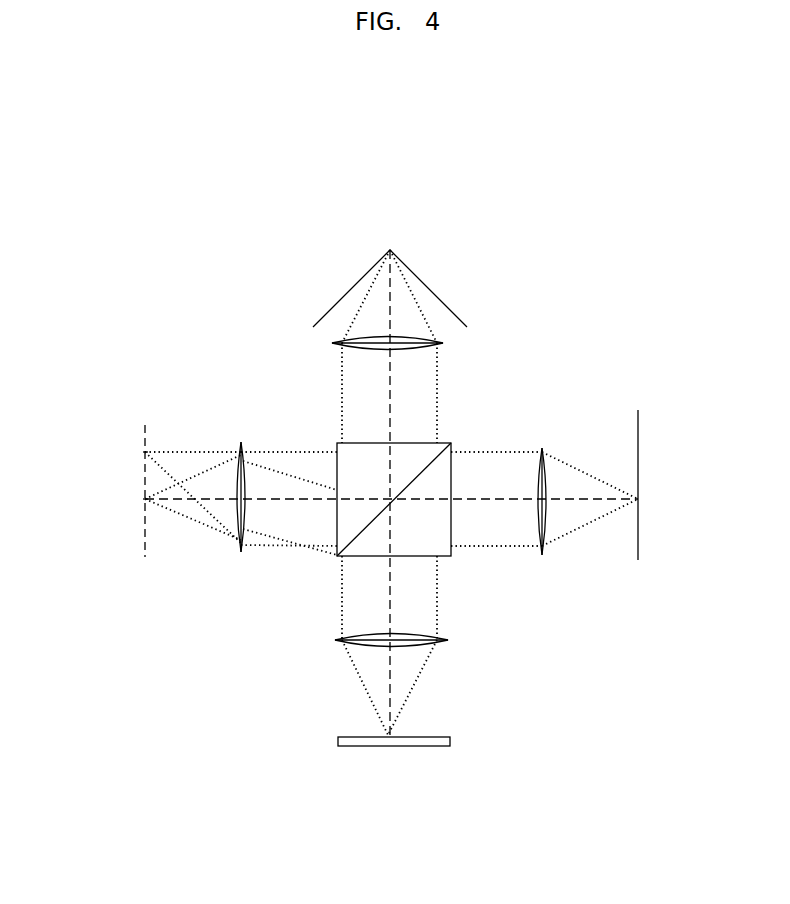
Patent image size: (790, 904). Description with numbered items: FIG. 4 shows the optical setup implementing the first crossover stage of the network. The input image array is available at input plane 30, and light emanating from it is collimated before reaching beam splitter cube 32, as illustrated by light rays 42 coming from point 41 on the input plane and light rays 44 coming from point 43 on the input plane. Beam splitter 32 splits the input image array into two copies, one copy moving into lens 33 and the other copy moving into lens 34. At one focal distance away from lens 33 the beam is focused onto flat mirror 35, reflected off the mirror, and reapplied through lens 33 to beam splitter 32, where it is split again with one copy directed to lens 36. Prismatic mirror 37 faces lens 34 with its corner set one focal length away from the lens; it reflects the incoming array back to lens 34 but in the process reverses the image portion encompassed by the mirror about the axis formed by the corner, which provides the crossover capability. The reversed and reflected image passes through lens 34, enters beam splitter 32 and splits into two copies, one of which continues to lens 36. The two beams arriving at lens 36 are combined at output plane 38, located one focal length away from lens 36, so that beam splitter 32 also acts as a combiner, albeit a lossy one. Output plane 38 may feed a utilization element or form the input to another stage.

The input plane 30 is at (145, 540).
The point on the input plane 41 is at (148, 500).
The point on the input plane 43 is at (145, 452).
The light rays 44 is at (200, 452).
The light rays 42 is at (238, 552).
The beam splitter cube 32 is at (432, 518).
The lens 33 is at (542, 448).
The flat mirror 35 is at (638, 532).
The lens 34 is at (443, 345).
The prismatic mirror 37 is at (407, 267).
The lens 36 is at (440, 643).
The output plane 38 is at (443, 743).